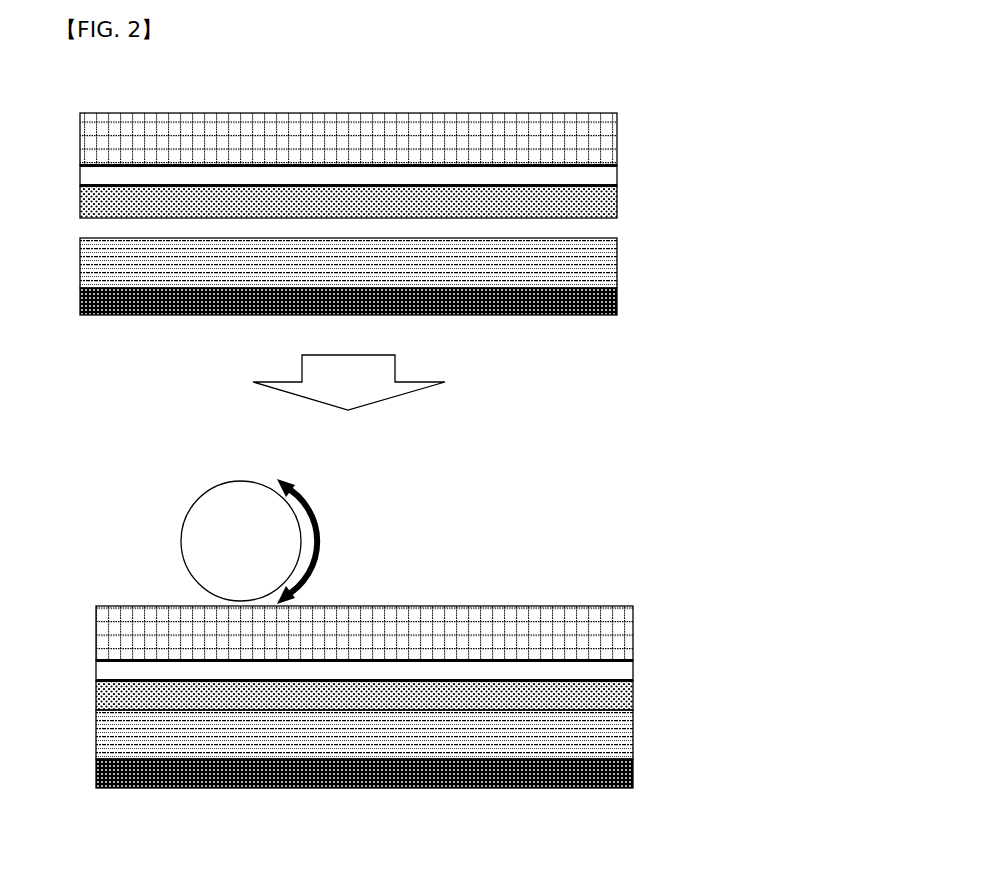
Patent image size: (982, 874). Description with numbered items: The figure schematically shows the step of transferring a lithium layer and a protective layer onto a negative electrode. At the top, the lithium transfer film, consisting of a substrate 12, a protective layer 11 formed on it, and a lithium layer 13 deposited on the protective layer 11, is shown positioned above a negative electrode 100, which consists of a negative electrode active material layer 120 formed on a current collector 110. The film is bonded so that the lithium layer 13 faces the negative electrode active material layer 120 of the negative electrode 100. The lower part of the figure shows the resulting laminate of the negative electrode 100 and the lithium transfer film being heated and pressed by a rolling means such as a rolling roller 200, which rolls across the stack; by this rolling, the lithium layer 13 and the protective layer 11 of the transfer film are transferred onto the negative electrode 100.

The substrate 12 is at (617, 133).
The protective layer 11 is at (606, 175).
The lithium layer 13 is at (608, 206).
The negative electrode 100 is at (474, 542).
The negative electrode active material layer 120 is at (617, 268).
The current collector 110 is at (617, 306).
The rolling roller 200 is at (198, 540).